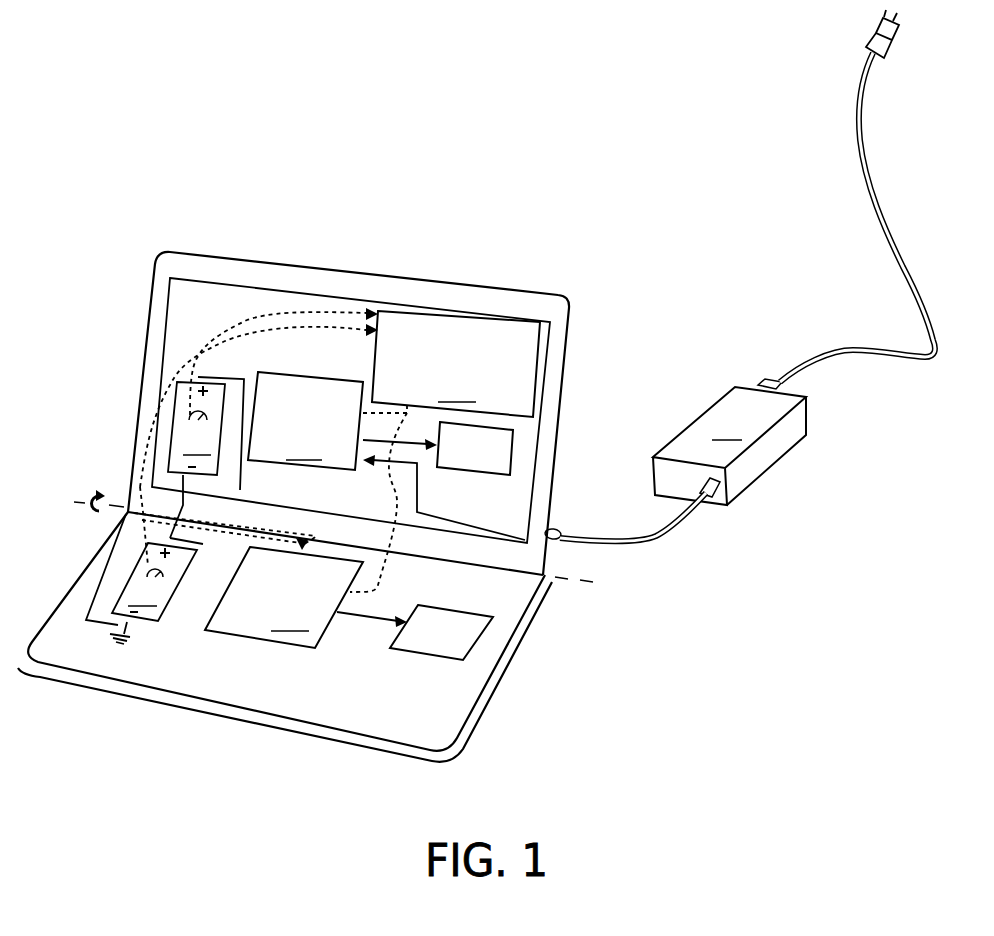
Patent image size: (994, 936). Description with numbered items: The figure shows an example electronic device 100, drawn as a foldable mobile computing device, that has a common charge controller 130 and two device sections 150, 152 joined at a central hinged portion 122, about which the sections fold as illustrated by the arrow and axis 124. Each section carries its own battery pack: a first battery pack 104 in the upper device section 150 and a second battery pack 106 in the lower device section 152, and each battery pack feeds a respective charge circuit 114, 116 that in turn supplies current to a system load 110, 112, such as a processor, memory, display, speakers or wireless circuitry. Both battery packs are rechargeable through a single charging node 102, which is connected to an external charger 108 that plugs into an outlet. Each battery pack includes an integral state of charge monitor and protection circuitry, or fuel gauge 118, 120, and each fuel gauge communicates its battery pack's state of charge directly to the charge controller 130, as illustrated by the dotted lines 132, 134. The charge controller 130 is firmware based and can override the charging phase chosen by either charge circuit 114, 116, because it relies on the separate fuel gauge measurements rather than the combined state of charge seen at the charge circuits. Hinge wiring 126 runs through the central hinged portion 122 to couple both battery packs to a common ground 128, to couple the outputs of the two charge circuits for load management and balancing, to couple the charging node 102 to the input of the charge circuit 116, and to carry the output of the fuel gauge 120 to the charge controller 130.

The electronic device 100 is at (278, 216).
The charging node 102 is at (563, 543).
The first battery pack 104 is at (206, 457).
The second battery pack 106 is at (144, 569).
The charger 108 is at (747, 275).
The system load 110 is at (448, 471).
The system load 112 is at (406, 653).
The charge circuit 114 is at (386, 482).
The charge circuit 116 is at (306, 597).
The fuel gauge 118 is at (183, 417).
The fuel gauge 120 is at (150, 575).
The central hinged portion 122 is at (545, 580).
The arrow and axis 124 is at (105, 488).
The hinge wiring 126 is at (266, 465).
The common ground 128 is at (124, 640).
The charge controller 130 is at (456, 364).
The dotted line 132 is at (277, 325).
The dotted line 134 is at (322, 310).
The device section 150 is at (554, 458).
The device section 152 is at (492, 708).